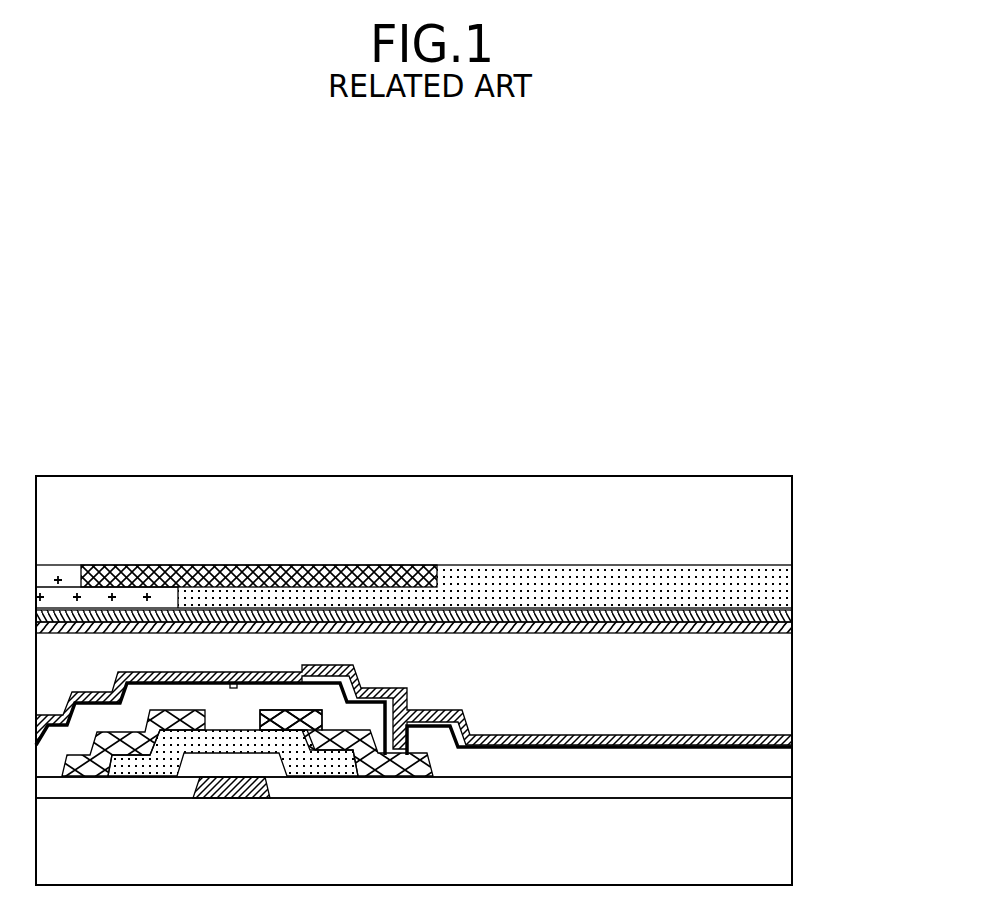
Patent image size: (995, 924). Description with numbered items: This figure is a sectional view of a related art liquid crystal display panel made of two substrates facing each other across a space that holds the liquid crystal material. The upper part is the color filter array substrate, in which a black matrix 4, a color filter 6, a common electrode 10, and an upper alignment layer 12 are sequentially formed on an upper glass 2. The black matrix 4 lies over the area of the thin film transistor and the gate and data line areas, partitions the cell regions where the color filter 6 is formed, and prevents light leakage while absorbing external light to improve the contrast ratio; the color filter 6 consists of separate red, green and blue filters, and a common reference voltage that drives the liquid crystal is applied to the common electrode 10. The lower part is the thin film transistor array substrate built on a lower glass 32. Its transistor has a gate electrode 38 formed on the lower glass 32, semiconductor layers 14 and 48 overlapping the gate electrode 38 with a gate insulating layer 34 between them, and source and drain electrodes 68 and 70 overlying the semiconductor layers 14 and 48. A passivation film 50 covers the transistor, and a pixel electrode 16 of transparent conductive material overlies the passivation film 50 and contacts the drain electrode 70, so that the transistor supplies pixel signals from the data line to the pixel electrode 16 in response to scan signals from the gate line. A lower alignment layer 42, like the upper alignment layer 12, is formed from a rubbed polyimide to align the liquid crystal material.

The upper glass 2 is at (792, 527).
The black matrix 4 is at (228, 563).
The color filter 6 is at (792, 586).
The common electrode 10 is at (792, 613).
The upper alignment layer 12 is at (792, 633).
The semiconductor layer 14 is at (133, 760).
The pixel electrode 16 is at (792, 747).
The lower glass 32 is at (792, 822).
The gate insulating layer 34 is at (471, 788).
The gate electrode 38 is at (233, 790).
The lower alignment layer 42 is at (792, 732).
The semiconductor layer 48 is at (322, 753).
The passivation film 50 is at (787, 765).
The source electrode 68 is at (177, 727).
The drain electrode 70 is at (278, 718).